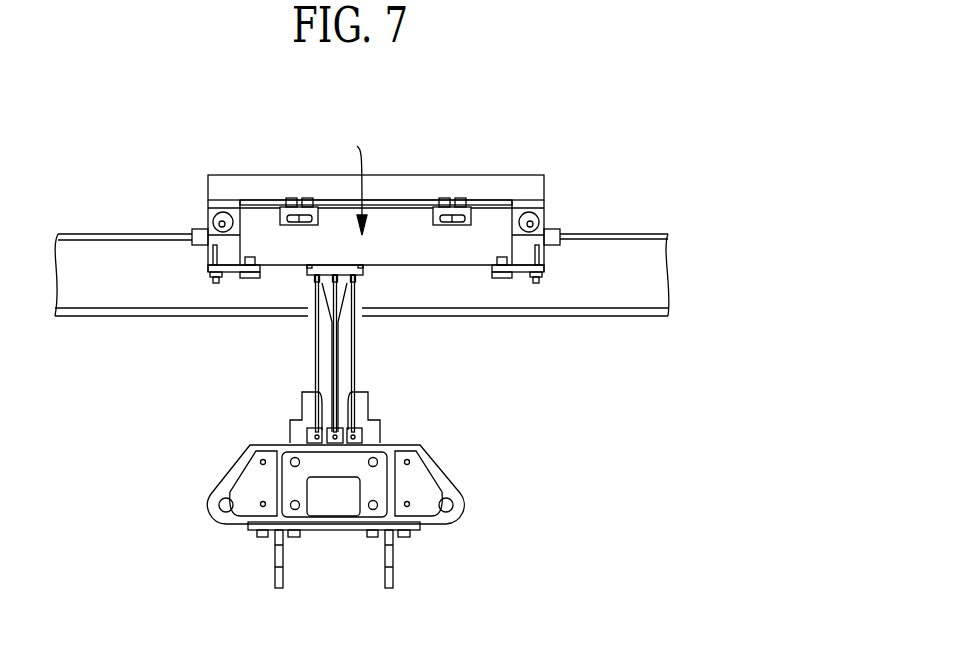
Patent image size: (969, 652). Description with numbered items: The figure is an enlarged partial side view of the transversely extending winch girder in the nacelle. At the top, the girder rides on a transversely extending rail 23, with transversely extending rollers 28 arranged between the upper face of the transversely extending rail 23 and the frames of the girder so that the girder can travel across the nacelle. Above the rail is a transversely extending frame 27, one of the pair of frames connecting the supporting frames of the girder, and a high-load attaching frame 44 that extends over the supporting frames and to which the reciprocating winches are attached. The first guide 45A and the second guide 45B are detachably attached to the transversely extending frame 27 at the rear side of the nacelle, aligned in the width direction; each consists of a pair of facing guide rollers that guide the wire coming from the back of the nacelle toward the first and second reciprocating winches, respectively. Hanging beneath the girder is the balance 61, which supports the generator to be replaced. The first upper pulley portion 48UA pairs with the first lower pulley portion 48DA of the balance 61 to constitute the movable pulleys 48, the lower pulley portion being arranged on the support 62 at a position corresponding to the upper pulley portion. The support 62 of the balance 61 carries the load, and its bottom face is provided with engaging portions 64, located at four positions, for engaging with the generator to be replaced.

The transversely extending rail 23 is at (623, 317).
The transversely extending frame 27 is at (354, 175).
The transversely extending roller 28 is at (207, 222).
The high-load attaching frame 44 is at (517, 175).
The first guide 45A is at (298, 206).
The second guide 45B is at (455, 206).
The movable pulley 48 is at (403, 359).
The first upper pulley portion 48UA is at (359, 275).
The first lower pulley portion 48DA is at (368, 428).
The balance 61 is at (222, 480).
The support 62 is at (437, 478).
The engaging portion 64 is at (275, 577).